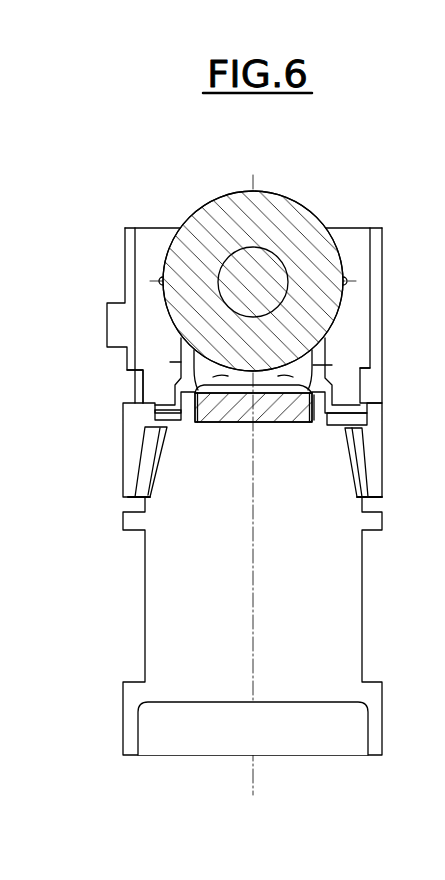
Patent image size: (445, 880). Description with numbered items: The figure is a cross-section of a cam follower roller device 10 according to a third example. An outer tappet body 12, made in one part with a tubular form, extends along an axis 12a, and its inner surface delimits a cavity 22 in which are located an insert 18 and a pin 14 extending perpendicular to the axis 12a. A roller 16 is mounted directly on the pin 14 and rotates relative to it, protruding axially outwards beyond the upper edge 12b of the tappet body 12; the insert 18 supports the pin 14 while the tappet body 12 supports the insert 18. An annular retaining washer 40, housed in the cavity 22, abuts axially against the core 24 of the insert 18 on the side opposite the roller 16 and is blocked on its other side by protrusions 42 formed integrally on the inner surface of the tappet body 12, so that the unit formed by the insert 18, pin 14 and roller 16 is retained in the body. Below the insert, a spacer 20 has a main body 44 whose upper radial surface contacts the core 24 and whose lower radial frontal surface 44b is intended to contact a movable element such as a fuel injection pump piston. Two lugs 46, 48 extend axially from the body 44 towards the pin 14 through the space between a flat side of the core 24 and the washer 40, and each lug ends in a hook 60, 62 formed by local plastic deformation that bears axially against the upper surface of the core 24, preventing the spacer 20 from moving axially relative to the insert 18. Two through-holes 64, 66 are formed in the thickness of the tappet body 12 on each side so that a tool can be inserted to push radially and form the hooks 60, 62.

The cam follower roller device 10 is at (354, 131).
The tappet body 12 is at (118, 260).
The axis 12a is at (256, 789).
The upper edge 12b is at (374, 235).
The pin 14 is at (241, 263).
The roller 16 is at (278, 202).
The insert 18 is at (193, 381).
The spacer 20 is at (246, 573).
The cavity 22 is at (158, 325).
The core 24 is at (237, 408).
The retaining washer 40 is at (383, 413).
The protrusions 42 is at (146, 461).
The main body 44 is at (273, 421).
The lower radial frontal surface 44b is at (182, 702).
The lug 46 is at (327, 402).
The lug 48 is at (208, 406).
The hook 60 is at (312, 357).
The hook 62 is at (182, 352).
The through-hole 64 is at (382, 375).
The through-hole 66 is at (133, 368).